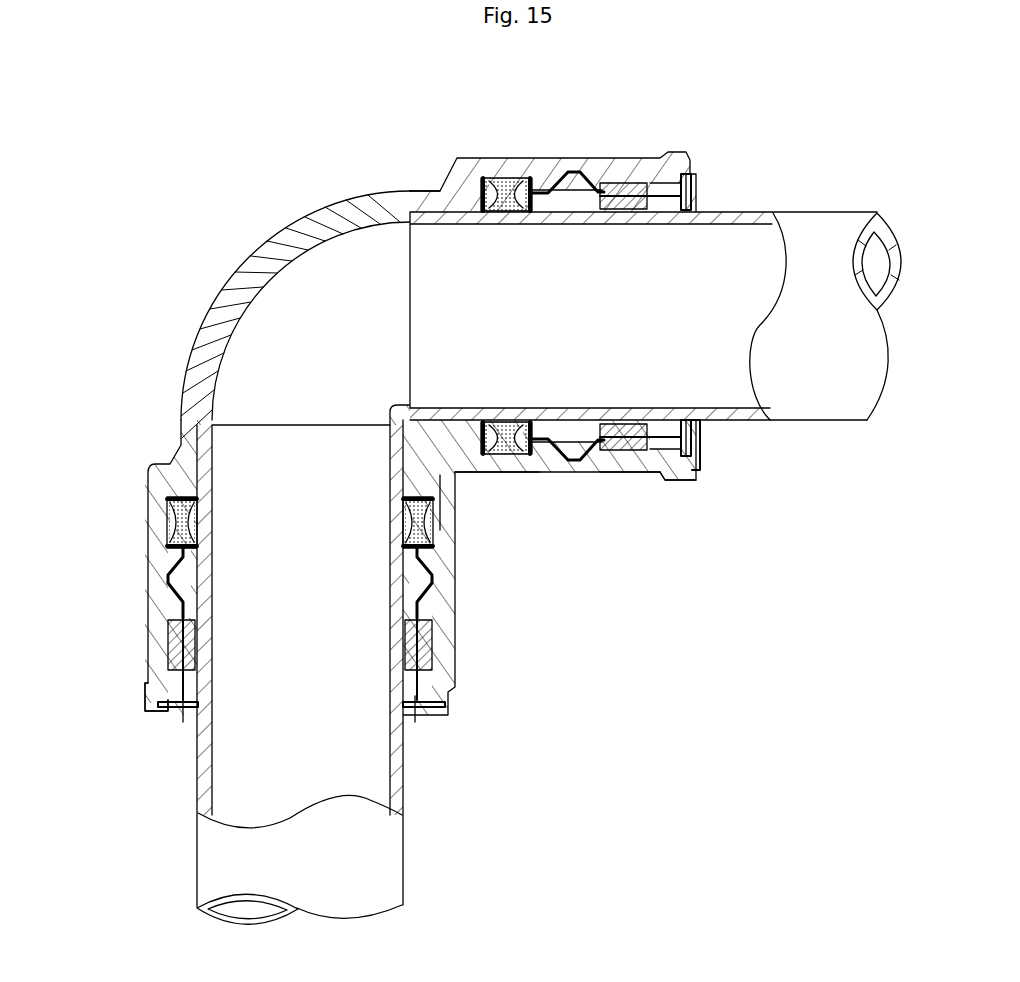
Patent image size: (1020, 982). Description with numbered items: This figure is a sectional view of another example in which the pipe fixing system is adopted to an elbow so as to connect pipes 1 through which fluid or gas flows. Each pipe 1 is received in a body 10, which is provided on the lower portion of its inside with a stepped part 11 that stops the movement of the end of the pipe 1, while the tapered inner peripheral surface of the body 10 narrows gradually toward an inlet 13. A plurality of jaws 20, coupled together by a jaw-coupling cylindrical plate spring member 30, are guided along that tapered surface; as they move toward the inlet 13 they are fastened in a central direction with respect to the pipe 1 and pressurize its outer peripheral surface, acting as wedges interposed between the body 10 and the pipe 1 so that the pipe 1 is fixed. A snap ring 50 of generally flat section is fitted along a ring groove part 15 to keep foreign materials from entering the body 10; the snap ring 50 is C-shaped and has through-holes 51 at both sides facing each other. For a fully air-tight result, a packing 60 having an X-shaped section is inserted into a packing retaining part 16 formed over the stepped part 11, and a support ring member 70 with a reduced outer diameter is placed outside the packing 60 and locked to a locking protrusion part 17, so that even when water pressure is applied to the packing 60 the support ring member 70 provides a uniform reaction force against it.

The pipe 1 is at (795, 213).
The body 10 is at (267, 258).
The stepped part 11 is at (400, 190).
The inlet 13 is at (700, 205).
The ring groove part 15 is at (665, 472).
The packing retaining part 16 is at (433, 520).
The locking protrusion part 17 is at (535, 472).
The jaw 20 is at (630, 190).
The jaw-coupling cylindrical plate spring member 30 is at (585, 172).
The snap ring 50 is at (165, 712).
The through-hole 51 is at (183, 712).
The packing 60 is at (505, 185).
The support ring member 70 is at (182, 548).